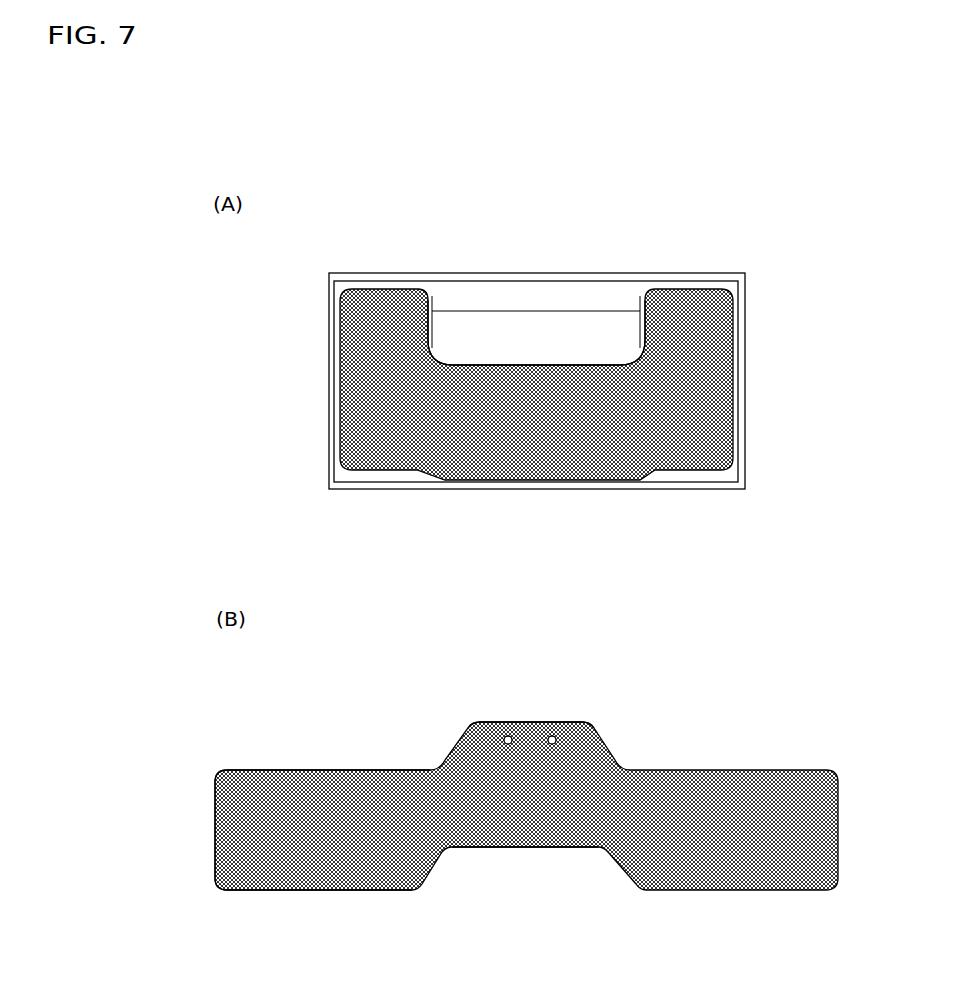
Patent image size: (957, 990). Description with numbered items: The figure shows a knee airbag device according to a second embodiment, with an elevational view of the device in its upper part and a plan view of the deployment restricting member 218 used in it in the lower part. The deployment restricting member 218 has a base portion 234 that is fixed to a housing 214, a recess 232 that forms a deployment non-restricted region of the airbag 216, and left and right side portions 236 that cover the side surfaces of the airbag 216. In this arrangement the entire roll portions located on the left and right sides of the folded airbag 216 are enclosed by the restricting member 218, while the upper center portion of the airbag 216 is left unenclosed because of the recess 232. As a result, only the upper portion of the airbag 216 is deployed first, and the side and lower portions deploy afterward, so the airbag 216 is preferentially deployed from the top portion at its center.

The housing 214 is at (723, 490).
The airbag 216 is at (501, 316).
The deployment restricting member 218 is at (738, 419).
The recess 232 is at (576, 366).
The base portion 234 is at (527, 735).
The side portions 236 is at (278, 792).